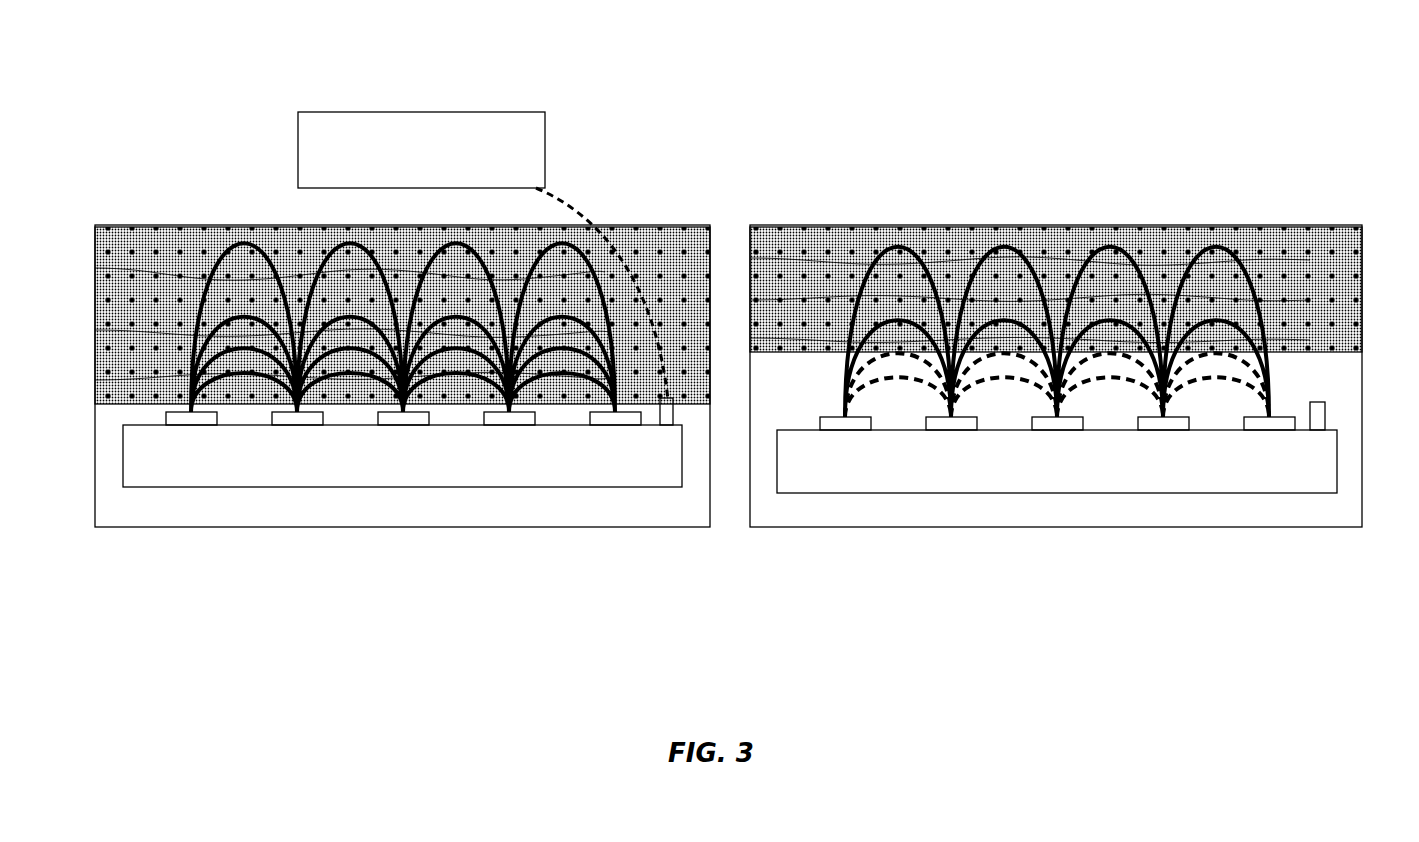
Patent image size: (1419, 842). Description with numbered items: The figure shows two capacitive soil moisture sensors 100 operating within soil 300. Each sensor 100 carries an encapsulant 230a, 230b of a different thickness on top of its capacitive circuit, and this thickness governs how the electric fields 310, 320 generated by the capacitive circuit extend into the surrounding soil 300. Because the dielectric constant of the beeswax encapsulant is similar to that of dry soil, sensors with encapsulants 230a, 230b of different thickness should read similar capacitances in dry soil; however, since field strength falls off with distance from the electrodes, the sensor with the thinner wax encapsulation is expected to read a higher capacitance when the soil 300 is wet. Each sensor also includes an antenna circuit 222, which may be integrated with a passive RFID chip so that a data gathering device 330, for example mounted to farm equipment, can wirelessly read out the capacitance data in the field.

The capacitive soil moisture sensor 100 is at (728, 353).
The antenna circuit 222 is at (673, 410).
The encapsulant 230a is at (552, 517).
The encapsulant 230b is at (1282, 517).
The soil 300 is at (713, 285).
The electric field 310 is at (176, 313).
The electric field 320 is at (1047, 253).
The data gathering device 330 is at (458, 112).